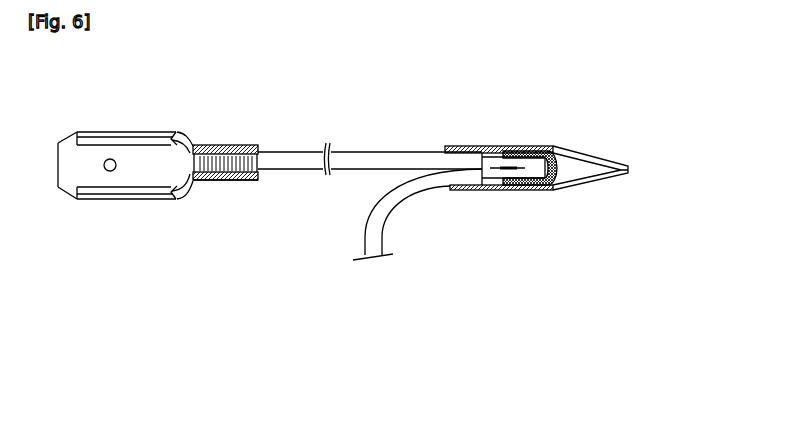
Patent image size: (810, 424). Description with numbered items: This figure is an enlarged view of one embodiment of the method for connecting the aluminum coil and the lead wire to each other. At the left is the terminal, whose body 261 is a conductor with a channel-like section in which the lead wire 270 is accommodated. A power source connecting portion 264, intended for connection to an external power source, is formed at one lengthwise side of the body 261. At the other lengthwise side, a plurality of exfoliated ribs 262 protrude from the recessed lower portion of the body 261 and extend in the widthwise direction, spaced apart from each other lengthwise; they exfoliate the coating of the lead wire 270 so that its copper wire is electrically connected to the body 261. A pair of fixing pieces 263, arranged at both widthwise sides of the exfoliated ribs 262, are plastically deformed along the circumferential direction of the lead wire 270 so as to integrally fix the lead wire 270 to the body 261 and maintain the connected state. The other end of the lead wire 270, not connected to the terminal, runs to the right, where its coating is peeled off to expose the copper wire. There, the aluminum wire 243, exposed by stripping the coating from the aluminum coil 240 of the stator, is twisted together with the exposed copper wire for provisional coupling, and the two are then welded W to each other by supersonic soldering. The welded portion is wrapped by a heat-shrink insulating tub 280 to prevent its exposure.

The body 261 is at (153, 121).
The power source connecting portion 264 is at (106, 158).
The fixing piece 263 is at (216, 145).
The exfoliated rib 262 is at (240, 176).
The lead wire 270 is at (353, 146).
The aluminum coil 240 is at (387, 220).
The heat-shrink insulating tub 280 is at (489, 146).
The aluminum wire 243 is at (497, 180).
The welding W is at (531, 146).